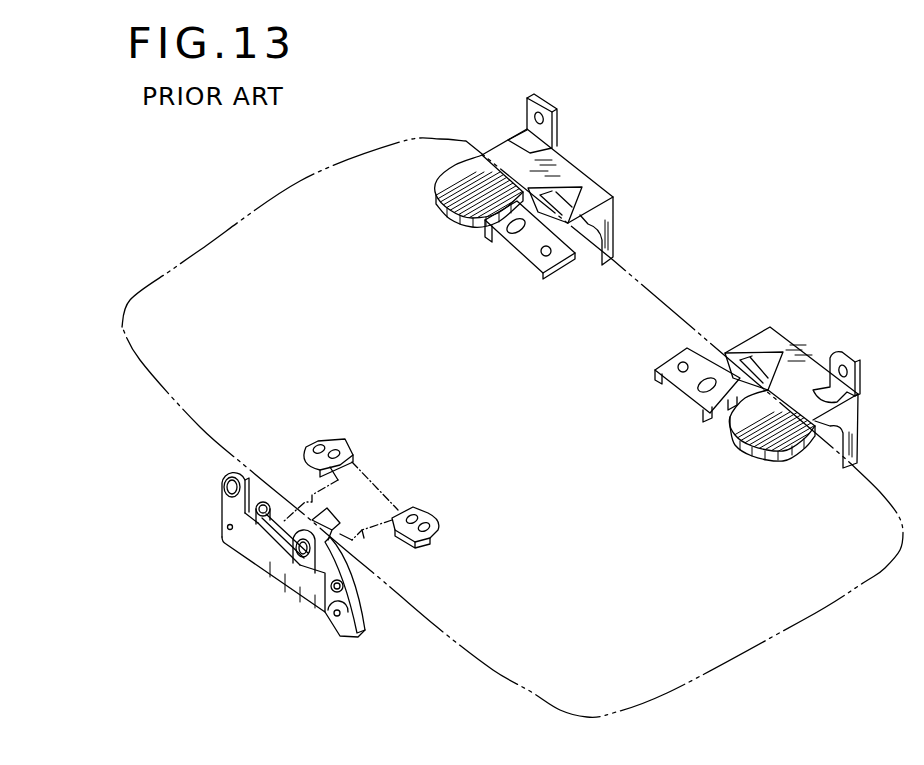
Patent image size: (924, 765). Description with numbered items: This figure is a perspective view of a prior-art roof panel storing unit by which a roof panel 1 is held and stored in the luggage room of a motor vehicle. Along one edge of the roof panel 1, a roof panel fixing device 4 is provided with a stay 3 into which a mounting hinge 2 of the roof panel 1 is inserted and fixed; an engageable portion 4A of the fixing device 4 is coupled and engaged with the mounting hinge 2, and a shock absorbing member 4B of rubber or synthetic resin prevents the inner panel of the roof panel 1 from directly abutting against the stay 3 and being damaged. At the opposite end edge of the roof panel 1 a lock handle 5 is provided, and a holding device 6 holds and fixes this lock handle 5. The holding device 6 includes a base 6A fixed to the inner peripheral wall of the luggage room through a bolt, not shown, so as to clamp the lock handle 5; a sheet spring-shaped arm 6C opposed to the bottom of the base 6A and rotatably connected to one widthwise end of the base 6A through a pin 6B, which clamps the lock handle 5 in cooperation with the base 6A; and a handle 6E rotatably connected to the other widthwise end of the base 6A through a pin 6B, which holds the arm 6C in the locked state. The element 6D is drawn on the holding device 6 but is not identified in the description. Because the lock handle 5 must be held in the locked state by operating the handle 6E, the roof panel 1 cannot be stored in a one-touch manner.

The roof panel 1 is at (270, 203).
The mounting hinge 2 is at (565, 255).
The stay 3 is at (518, 135).
The roof panel fixing device 4 is at (612, 190).
The engageable portion 4A is at (560, 190).
The shock absorbing member 4B is at (451, 178).
The lock handle 5 is at (375, 493).
The holding device 6 is at (275, 574).
The base 6A is at (273, 567).
The pin 6B is at (222, 530).
The sheet spring-shaped arm 6C is at (255, 553).
The hinge hole 6D is at (337, 618).
The handle 6E is at (357, 590).